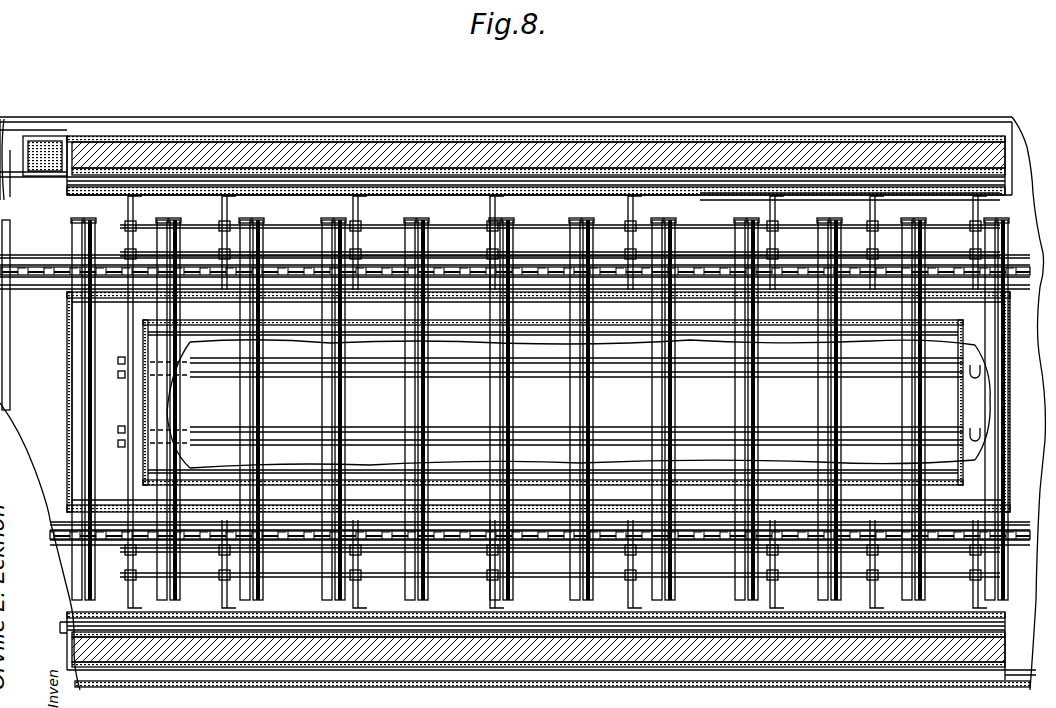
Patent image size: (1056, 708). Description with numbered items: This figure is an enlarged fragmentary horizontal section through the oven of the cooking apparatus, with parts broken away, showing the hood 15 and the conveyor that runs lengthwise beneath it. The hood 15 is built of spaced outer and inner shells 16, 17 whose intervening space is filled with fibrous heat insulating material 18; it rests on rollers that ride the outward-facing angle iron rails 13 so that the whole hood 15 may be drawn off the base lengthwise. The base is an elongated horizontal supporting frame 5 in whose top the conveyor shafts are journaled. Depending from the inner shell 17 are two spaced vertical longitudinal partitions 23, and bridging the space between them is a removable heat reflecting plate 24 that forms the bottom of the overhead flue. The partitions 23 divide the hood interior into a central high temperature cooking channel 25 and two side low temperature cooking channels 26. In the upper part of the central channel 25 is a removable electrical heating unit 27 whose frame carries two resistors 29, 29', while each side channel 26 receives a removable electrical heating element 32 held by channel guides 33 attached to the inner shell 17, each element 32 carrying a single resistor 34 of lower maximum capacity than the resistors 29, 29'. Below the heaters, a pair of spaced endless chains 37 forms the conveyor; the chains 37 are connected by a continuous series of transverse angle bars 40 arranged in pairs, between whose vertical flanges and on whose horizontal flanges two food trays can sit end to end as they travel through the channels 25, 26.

The supporting frame 5 is at (293, 123).
The angle iron rails 13 is at (17, 172).
The hood 15 is at (377, 127).
The outer shell 16 is at (150, 143).
The inner shell 17 is at (668, 188).
The fibrous heat insulating material 18 is at (250, 143).
The vertical longitudinal partitions 23 is at (598, 323).
The heat reflecting plate 24 is at (182, 347).
The high temperature cooking channel 25 is at (554, 404).
The low temperature cooking channels 26 is at (538, 405).
The electrical heating unit 27 is at (984, 401).
The resistor 29 is at (576, 385).
The resistor 29' is at (576, 418).
The electrical heating element 32 is at (643, 218).
The channel guides 33 is at (701, 196).
The resistor 34 is at (540, 254).
The endless chains 37 is at (446, 270).
The transverse angle bars 40 is at (320, 223).